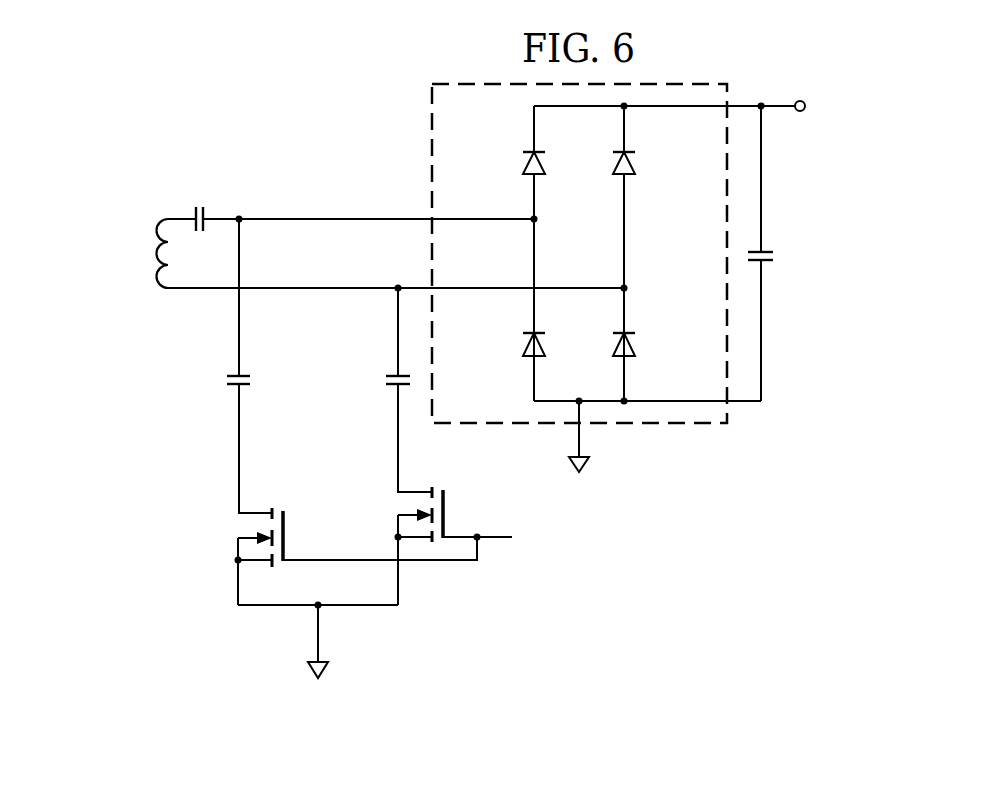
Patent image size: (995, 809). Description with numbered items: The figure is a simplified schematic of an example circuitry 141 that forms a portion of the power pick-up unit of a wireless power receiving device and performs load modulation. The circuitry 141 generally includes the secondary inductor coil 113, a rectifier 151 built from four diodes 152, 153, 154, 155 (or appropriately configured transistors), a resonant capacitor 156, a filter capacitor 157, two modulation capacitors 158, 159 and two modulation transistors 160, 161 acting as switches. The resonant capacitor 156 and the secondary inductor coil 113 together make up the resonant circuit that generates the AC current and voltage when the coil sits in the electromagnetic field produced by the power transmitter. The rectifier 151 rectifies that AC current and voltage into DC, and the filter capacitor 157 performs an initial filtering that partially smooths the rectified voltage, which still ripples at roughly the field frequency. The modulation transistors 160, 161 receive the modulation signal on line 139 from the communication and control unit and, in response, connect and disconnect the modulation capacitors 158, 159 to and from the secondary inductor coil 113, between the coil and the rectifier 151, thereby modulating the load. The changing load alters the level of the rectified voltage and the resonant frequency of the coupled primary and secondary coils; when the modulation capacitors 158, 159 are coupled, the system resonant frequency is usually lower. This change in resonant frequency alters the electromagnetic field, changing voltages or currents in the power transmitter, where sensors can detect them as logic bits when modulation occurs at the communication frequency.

The secondary inductor coil 113 is at (157, 245).
The line 139 is at (487, 540).
The circuitry 141 is at (266, 88).
The rectifier 151 is at (694, 74).
The diode 152 is at (522, 158).
The diode 153 is at (638, 158).
The diode 154 is at (522, 340).
The diode 155 is at (638, 340).
The resonant capacitor 156 is at (198, 205).
The filter capacitor 157 is at (775, 256).
The modulation capacitor 158 is at (225, 381).
The modulation capacitor 159 is at (385, 381).
The modulation transistor 160 is at (288, 525).
The modulation transistor 161 is at (447, 503).